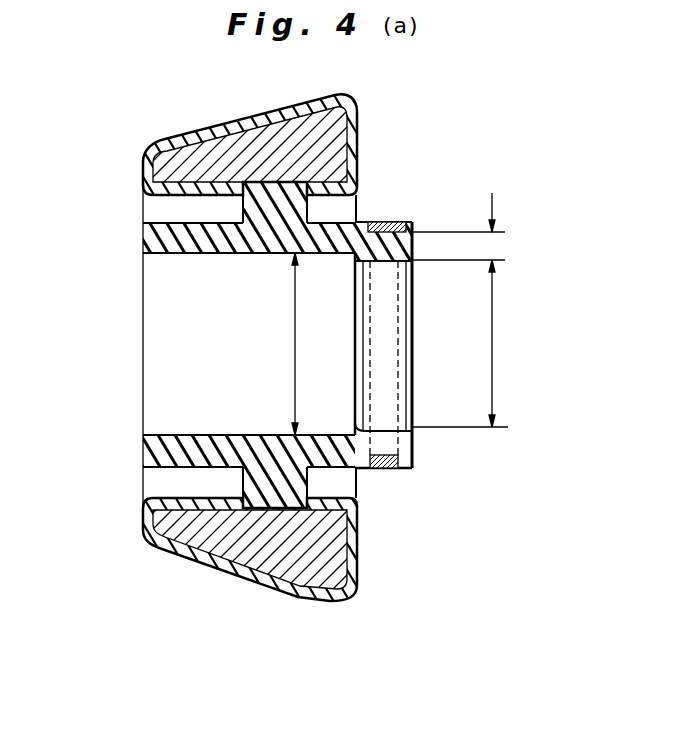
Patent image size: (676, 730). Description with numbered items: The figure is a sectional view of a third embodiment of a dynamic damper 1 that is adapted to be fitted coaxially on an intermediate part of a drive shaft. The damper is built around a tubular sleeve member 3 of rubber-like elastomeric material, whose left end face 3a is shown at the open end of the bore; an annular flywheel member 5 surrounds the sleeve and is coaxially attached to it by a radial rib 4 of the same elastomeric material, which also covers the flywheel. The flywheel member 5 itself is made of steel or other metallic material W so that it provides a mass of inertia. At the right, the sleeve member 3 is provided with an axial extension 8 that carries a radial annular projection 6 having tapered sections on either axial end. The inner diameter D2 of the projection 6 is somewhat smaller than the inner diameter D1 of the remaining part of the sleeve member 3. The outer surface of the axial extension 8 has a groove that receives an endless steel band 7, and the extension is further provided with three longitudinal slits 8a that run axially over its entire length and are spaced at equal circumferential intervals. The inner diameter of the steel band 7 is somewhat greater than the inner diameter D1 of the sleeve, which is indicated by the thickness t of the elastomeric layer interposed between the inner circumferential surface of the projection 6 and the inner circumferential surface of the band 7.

The dynamic damper 1 is at (389, 149).
The sleeve member 3 is at (150, 244).
The end face of core tube 3a is at (178, 256).
The radial rib 4 is at (240, 479).
The flywheel member 5 is at (141, 541).
The radial annular projection 6 is at (385, 263).
The endless steel band 7 is at (382, 222).
The axial extension 8 is at (412, 482).
The longitudinal slit 8a is at (404, 442).
The metallic material W is at (230, 546).
The inner diameter of the sleeve member D1 is at (280, 344).
The inner diameter of the annular projection D2 is at (460, 343).
The thickness of elastomeric layer t is at (458, 222).